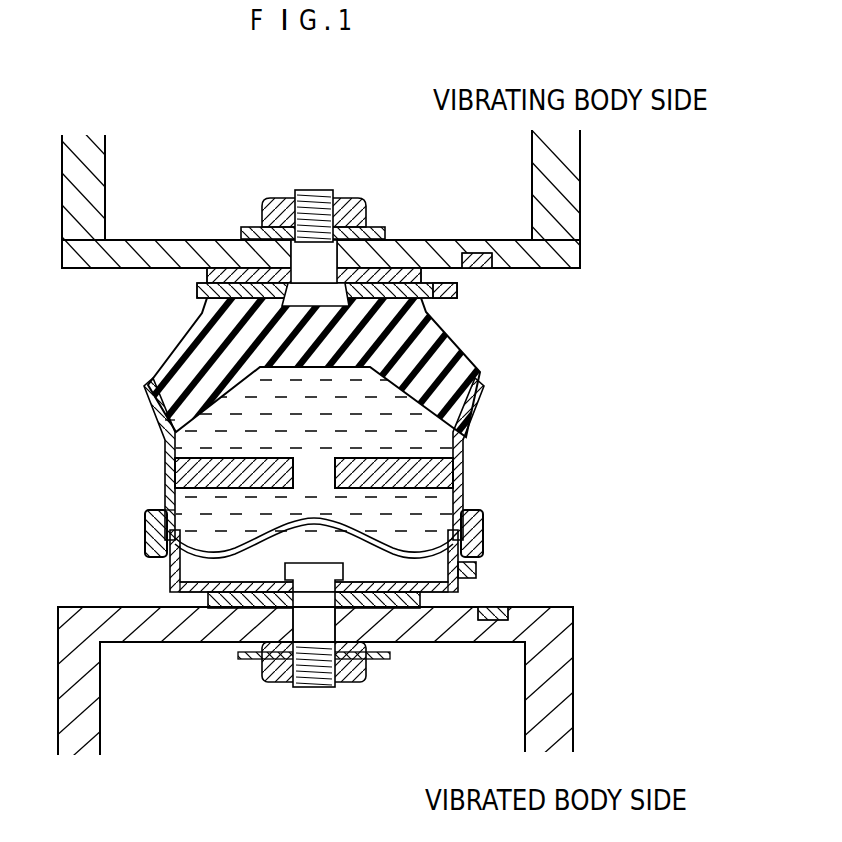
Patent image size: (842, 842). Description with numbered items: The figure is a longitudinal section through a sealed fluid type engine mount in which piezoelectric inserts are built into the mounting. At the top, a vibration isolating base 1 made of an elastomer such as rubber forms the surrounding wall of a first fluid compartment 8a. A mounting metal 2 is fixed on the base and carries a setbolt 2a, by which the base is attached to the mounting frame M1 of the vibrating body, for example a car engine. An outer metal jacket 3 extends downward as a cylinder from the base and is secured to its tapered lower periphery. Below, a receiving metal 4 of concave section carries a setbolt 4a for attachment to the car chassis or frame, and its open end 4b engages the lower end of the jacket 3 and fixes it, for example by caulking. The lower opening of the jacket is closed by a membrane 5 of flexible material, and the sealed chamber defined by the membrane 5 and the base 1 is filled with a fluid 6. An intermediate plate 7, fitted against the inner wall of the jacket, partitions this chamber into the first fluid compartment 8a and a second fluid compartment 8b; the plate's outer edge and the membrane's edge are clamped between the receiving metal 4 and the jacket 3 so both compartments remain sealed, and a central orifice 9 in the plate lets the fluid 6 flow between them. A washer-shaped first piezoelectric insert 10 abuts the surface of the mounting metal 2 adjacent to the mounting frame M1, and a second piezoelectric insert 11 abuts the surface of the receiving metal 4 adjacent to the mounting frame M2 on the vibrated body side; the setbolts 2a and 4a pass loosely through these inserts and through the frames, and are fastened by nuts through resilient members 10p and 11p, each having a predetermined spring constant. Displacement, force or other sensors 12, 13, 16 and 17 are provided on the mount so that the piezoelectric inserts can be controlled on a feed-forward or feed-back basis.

The vibration isolating base 1 is at (462, 352).
The mounting metal 2 is at (197, 290).
The setbolt 2a is at (318, 225).
The outer metal jacket 3 is at (147, 398).
The receiving metal 4 is at (172, 587).
The setbolt 4a is at (337, 640).
The open end 4b is at (150, 540).
The membrane 5 is at (287, 537).
The fluid 6 is at (167, 517).
The intermediate plate 7 is at (165, 427).
The first fluid compartment 8a is at (222, 400).
The second fluid compartment 8b is at (167, 492).
The orifice 9 is at (168, 458).
The first piezoelectric insert 10 is at (384, 269).
The resilient member 10p is at (263, 252).
The second piezoelectric insert 11 is at (458, 594).
The resilient member 11p is at (266, 642).
The sensor 12 is at (496, 262).
The sensor 13 is at (497, 606).
The sensor 16 is at (460, 292).
The sensor 17 is at (478, 568).
The mounting frame M1 is at (562, 167).
The mounting frame M2 is at (560, 662).